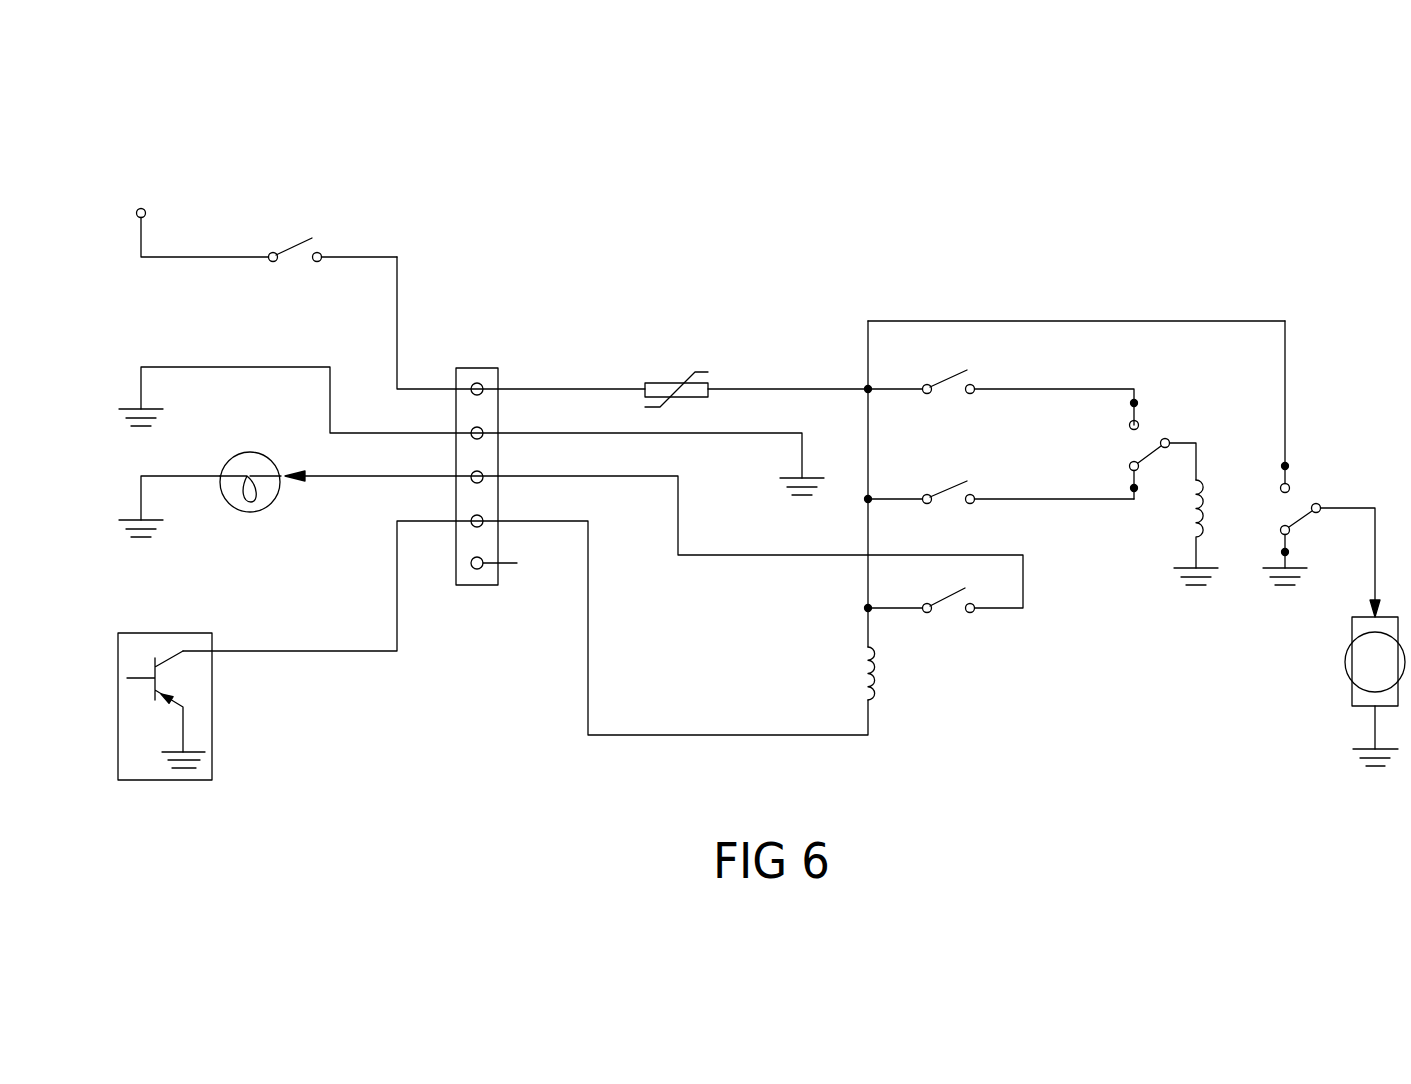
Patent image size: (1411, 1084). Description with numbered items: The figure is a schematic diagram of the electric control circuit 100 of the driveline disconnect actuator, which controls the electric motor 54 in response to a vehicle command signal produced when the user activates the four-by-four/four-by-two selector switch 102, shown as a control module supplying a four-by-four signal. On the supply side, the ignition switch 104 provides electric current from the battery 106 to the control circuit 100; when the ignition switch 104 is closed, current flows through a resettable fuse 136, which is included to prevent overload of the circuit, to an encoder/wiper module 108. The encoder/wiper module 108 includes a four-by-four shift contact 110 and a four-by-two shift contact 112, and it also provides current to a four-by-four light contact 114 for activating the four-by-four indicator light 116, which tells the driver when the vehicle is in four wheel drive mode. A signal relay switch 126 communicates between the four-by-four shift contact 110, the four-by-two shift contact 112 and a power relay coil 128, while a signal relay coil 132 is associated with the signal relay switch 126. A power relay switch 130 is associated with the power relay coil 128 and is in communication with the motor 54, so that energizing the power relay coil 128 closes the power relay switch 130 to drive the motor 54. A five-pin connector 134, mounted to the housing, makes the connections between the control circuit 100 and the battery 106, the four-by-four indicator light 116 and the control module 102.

The control circuit 100 is at (828, 246).
The 4×4/4×2 selector switch 102 is at (250, 755).
The ignition switch 104 is at (310, 239).
The battery 106 is at (142, 222).
The encoder/wiper module 108 is at (1034, 276).
The 4×4 shift contact 110 is at (946, 381).
The 4×2 shift contact 112 is at (946, 492).
The 4×4 light contact 114 is at (955, 593).
The 4×4 indicator light 116 is at (272, 503).
The signal relay switch 126 is at (1148, 457).
The power relay coil 128 is at (1193, 512).
The power relay switch 130 is at (1301, 510).
The signal relay coil 132 is at (873, 700).
The 5 pin connector 134 is at (477, 585).
The resettable fuse 136 is at (702, 381).
The electric motor 54 is at (1347, 651).